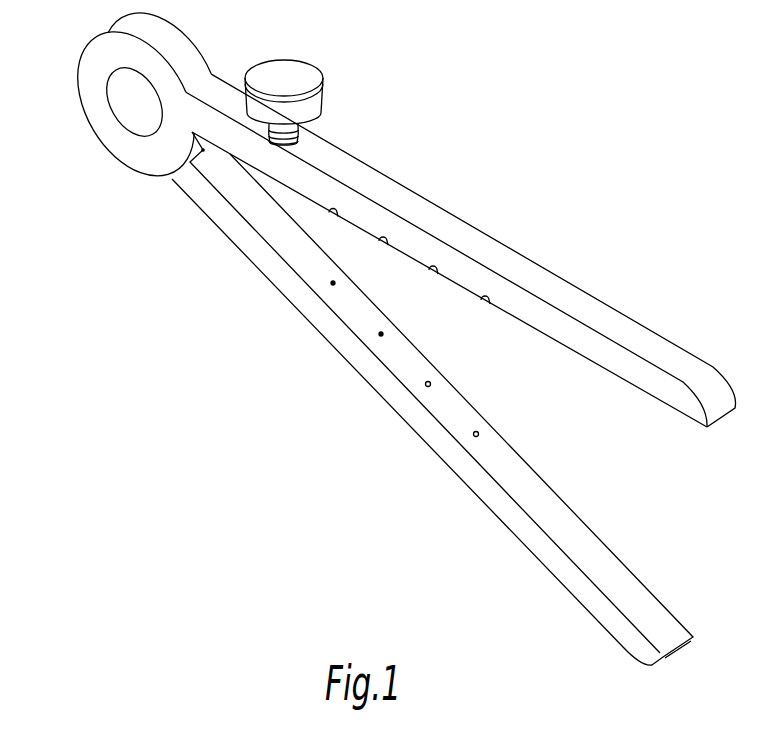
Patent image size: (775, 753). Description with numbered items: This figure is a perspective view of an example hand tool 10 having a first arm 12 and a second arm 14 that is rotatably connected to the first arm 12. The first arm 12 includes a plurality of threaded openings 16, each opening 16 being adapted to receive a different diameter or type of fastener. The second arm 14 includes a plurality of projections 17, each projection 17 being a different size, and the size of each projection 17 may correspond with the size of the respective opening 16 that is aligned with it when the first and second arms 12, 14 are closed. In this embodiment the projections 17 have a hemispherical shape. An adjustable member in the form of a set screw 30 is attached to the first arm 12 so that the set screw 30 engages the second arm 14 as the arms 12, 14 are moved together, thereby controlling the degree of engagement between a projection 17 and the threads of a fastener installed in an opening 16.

The tool 10 is at (407, 339).
The first arm 12 is at (461, 250).
The second arm 14 is at (432, 398).
The opening 16 is at (383, 239).
The projection 17 is at (379, 335).
The set screw 30 is at (278, 72).